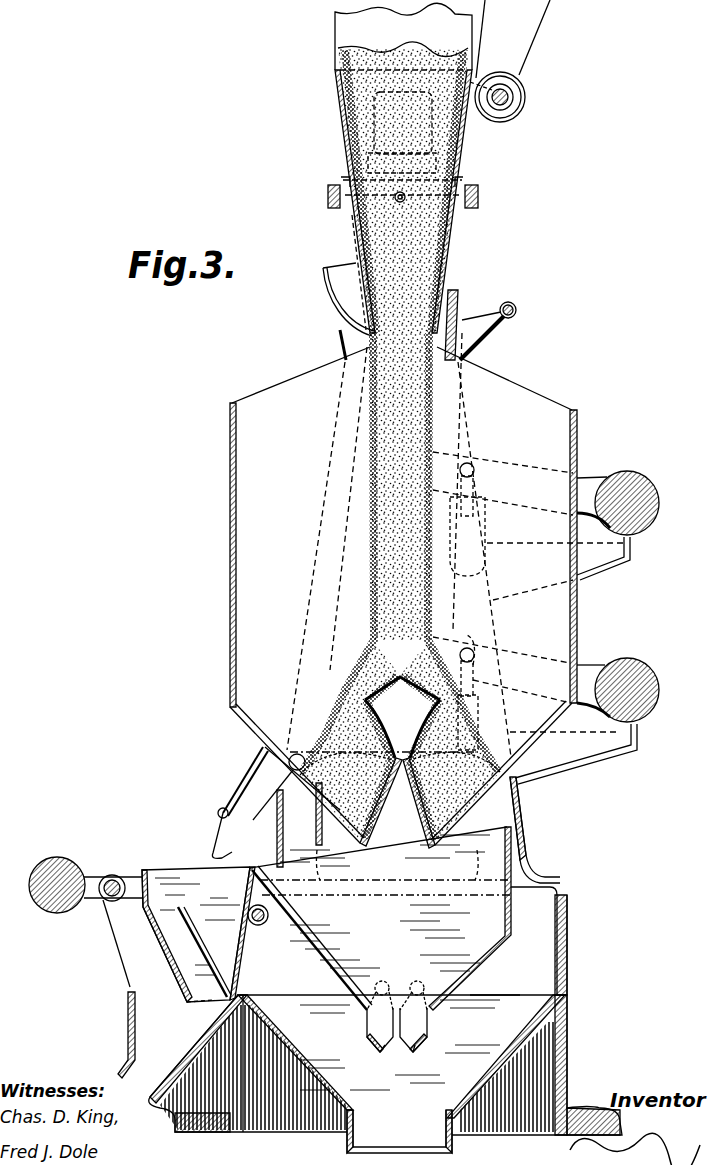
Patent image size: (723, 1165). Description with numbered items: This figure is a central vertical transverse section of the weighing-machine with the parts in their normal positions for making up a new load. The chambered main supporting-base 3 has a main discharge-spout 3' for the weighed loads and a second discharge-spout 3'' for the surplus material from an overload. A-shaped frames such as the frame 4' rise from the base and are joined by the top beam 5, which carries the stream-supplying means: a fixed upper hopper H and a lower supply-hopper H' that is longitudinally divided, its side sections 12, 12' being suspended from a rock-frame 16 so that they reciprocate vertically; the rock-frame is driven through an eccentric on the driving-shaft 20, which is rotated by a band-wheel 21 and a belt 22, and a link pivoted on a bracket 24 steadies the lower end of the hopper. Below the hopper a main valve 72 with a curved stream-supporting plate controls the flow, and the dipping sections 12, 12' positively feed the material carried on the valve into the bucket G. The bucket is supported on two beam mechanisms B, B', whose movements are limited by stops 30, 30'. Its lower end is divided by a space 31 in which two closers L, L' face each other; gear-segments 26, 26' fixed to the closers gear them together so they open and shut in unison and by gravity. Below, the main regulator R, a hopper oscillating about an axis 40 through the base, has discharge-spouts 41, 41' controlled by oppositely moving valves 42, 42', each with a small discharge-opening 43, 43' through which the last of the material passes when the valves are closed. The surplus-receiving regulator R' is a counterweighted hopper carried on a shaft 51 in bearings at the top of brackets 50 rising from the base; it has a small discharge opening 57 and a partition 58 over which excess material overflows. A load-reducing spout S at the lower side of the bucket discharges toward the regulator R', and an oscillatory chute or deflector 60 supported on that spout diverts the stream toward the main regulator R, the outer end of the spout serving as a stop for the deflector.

The upper hopper H is at (391, 168).
The top plate or cross-beam 5 is at (376, 128).
The rock-frame 16 is at (328, 196).
The band-wheel 21 is at (506, 86).
The belt 22 is at (539, 34).
The driving-shaft 20 is at (511, 97).
The lower supply-hopper H' is at (346, 272).
The side hopper-section 12 is at (466, 295).
The side hopper-section 12' is at (330, 258).
The main valve 72 is at (330, 302).
The bracket 24 is at (484, 320).
The A-shaped frame 4' is at (328, 345).
The bucket G is at (403, 589).
The beam mechanism B is at (546, 526).
The stop 30 is at (605, 560).
The beam mechanism B' is at (546, 692).
The stop 30' is at (576, 754).
The space 31 is at (402, 717).
The load-reducing spout S is at (258, 765).
The stream-deflector 60 is at (220, 815).
The closer L is at (302, 807).
The closer L' is at (503, 830).
The gear-segment 26 is at (351, 809).
The gear-segment 26' is at (451, 811).
The shaft 51 is at (113, 878).
The surplus-receiving regulator R' is at (198, 925).
The partition 58 is at (190, 915).
The bracket 50 is at (118, 937).
The axis 40 is at (260, 923).
The main regulator R is at (380, 958).
The surplus discharge-spout 3'' is at (112, 1035).
The discharge opening 57 is at (201, 1011).
The main supporting-base 3 is at (544, 941).
The discharge-spout 41 is at (355, 1016).
The discharge-spout 41' is at (433, 1016).
The valve 42 is at (353, 1045).
The valve 42' is at (443, 1038).
The discharge-opening 43 is at (361, 1066).
The discharge-opening 43' is at (419, 1063).
The main discharge-spout 3' is at (385, 1133).